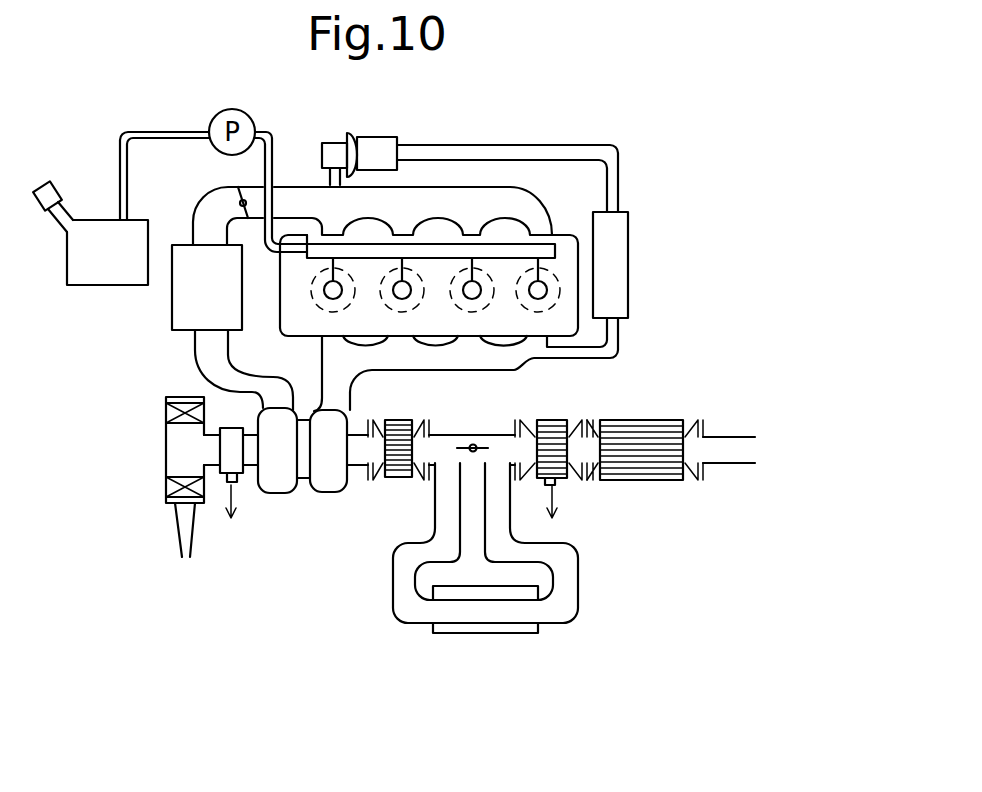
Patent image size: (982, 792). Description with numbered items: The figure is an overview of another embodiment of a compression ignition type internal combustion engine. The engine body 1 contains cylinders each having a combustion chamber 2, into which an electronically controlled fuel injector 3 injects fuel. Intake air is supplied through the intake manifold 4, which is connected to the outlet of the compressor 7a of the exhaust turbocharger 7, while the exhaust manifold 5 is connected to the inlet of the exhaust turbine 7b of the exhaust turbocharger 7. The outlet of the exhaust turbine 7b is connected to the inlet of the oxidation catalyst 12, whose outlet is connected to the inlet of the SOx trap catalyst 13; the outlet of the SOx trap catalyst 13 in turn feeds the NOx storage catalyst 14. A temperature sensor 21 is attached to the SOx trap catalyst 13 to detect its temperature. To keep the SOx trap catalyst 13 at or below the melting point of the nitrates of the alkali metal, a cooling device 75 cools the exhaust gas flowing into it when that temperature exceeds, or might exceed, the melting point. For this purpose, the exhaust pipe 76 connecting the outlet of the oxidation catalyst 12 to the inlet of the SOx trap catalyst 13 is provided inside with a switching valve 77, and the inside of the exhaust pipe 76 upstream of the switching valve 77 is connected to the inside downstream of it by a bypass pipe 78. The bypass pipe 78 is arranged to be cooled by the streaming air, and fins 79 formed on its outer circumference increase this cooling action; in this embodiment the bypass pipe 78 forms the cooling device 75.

The engine body 1 is at (581, 216).
The combustion chamber 2 is at (323, 310).
The electronically controlled fuel injector 3 is at (324, 289).
The intake manifold 4 is at (517, 197).
The exhaust manifold 5 is at (422, 364).
The exhaust turbocharger 7 is at (300, 502).
The compressor 7a is at (276, 485).
The exhaust turbine 7b is at (332, 487).
The oxidation catalyst 12 is at (398, 477).
The SOx trap catalyst 13 is at (552, 422).
The NOx storage catalyst 14 is at (648, 476).
The temperature sensor 21 is at (557, 485).
The cooling device 75 is at (482, 560).
The exhaust pipe 76 is at (451, 436).
The switching valve 77 is at (489, 434).
The bypass pipe 78 is at (572, 592).
The fins 79 is at (488, 628).